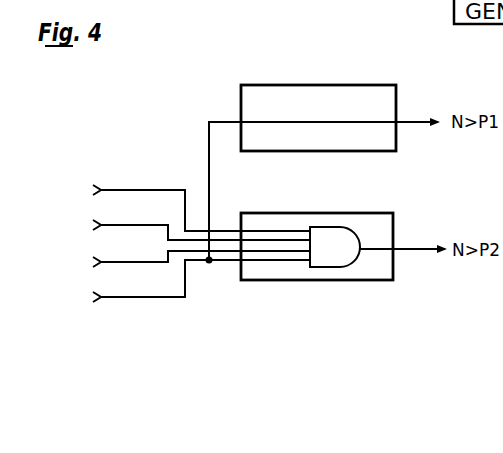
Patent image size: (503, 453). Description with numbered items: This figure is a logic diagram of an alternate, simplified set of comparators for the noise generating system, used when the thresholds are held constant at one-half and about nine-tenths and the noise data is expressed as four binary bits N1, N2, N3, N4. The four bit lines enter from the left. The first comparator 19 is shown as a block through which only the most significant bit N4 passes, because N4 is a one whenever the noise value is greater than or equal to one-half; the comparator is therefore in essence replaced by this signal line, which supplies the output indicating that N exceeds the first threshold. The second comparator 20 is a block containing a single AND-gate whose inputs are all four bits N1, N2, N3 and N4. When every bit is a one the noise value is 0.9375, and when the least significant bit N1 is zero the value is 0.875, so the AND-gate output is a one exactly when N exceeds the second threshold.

The first comparator 19 is at (350, 85).
The second comparator 20 is at (347, 213).
The least significant bit N1 is at (180, 201).
The second noise bit N2 is at (180, 224).
The third noise bit N3 is at (180, 256).
The most significant bit N4 is at (180, 280).